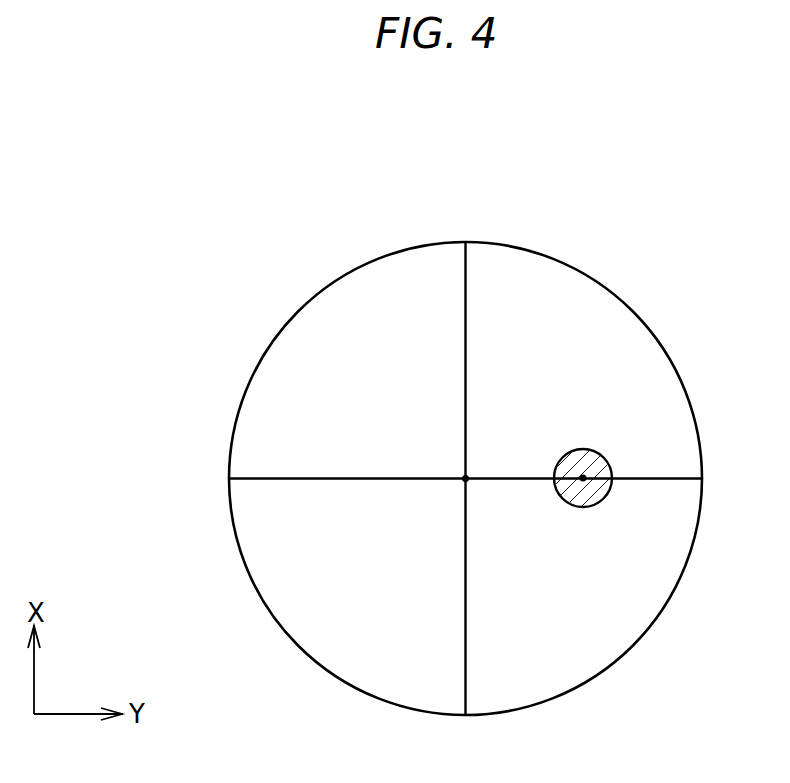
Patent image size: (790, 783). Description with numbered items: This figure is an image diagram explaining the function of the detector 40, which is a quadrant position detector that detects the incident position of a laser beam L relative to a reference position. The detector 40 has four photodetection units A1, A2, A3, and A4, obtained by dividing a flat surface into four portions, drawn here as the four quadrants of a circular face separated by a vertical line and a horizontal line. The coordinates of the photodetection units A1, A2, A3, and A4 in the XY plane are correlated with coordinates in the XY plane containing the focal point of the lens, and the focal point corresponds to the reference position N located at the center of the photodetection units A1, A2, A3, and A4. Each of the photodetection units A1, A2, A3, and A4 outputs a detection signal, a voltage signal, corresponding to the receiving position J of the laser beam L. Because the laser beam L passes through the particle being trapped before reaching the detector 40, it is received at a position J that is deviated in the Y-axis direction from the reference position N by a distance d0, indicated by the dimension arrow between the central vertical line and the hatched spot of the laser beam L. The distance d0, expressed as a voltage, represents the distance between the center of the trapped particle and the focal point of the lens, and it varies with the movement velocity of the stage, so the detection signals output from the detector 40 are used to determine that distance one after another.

The detector 40 is at (586, 269).
The photodetection unit A1 is at (610, 358).
The photodetection unit A2 is at (610, 600).
The photodetection unit A3 is at (322, 358).
The photodetection unit A4 is at (322, 600).
The reference position N is at (465, 479).
The receiving position J is at (583, 478).
The laser beam L is at (572, 502).
The distance d0 is at (583, 470).